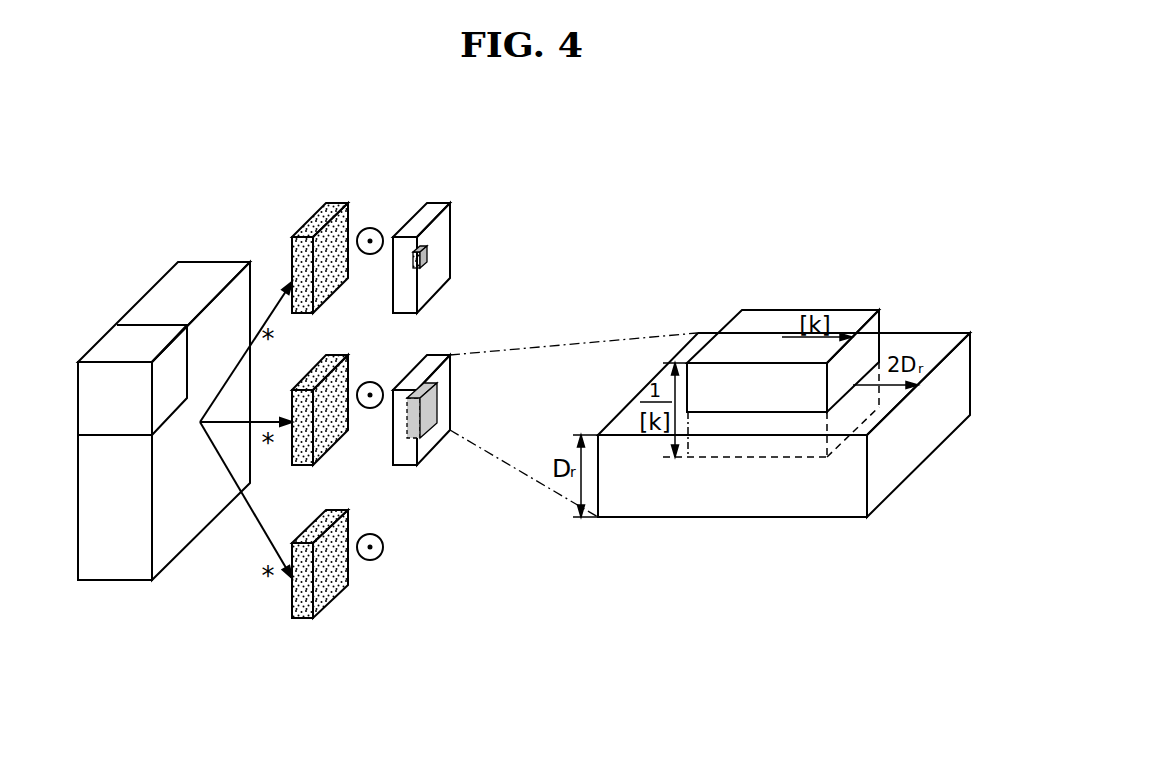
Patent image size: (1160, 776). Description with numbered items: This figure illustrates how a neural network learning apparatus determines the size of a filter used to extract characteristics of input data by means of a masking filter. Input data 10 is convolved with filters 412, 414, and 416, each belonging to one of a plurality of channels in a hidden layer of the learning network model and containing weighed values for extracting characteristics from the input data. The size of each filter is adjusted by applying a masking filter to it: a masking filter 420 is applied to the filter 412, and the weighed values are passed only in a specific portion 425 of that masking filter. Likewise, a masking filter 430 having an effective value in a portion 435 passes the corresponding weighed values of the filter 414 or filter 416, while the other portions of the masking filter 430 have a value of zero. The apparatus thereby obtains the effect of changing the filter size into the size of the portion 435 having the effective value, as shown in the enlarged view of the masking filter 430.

The input feature map 10 is at (208, 273).
The filter 412 is at (330, 207).
The filter 414 is at (330, 363).
The filter 416 is at (330, 513).
The masking filter 420 is at (432, 212).
The output element 425 is at (428, 257).
The masking filter 430 is at (430, 363).
The portion having the effective value 435 is at (428, 398).